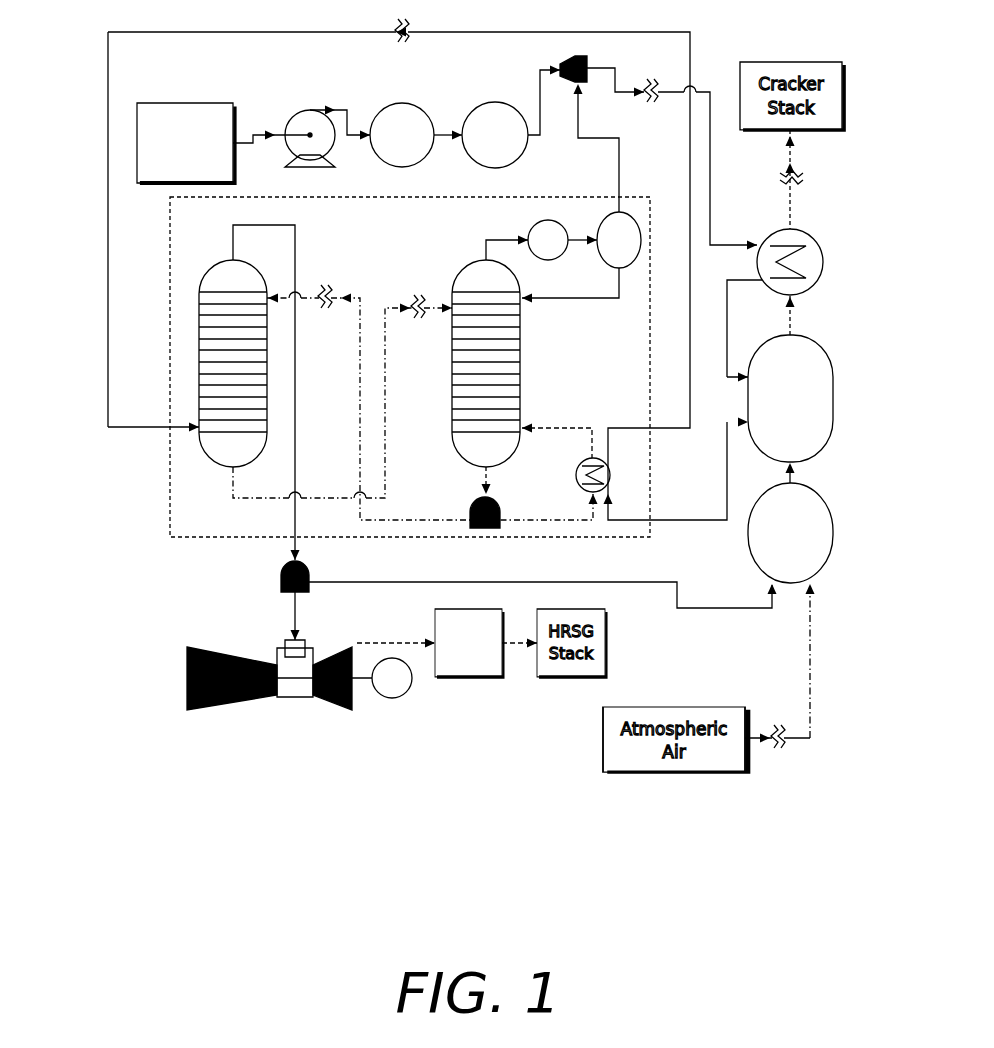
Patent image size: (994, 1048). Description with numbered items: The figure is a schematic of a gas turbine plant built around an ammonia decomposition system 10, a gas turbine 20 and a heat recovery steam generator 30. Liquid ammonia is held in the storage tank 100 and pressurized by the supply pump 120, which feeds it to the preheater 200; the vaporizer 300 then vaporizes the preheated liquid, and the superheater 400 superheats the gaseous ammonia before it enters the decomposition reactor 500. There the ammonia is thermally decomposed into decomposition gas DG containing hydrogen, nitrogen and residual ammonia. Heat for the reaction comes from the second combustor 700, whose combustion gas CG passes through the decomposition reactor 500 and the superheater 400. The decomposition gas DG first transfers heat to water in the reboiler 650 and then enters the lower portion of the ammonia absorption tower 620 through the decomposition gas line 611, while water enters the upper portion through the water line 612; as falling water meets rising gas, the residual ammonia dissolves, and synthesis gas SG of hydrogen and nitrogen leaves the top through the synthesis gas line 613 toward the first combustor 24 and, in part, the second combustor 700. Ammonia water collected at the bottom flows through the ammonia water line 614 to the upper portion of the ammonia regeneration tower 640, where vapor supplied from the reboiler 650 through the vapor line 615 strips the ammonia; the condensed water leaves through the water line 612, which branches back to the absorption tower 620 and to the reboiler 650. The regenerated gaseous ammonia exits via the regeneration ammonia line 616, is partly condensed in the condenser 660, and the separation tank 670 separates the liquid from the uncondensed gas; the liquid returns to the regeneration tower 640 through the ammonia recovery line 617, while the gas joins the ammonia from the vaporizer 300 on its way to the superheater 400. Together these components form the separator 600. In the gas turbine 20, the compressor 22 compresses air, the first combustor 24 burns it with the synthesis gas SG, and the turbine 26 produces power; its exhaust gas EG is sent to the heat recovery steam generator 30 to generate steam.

The ammonia decomposition system 10 is at (832, 208).
The gas turbine 20 is at (299, 687).
The compressor 22 is at (230, 706).
The first combustor 24 is at (291, 662).
The turbine 26 is at (332, 698).
The heat recovery steam generator 30 is at (469, 680).
The storage tank 100 is at (187, 101).
The supply pump 120 is at (311, 118).
The preheater 200 is at (404, 118).
The vaporizer 300 is at (497, 118).
The superheater 400 is at (834, 262).
The decomposition reactor 500 is at (835, 398).
The separator 600 is at (160, 255).
The decomposition gas line 611 is at (136, 430).
The water line 612 is at (360, 294).
The synthesis gas line 613 is at (286, 509).
The ammonia water line 614 is at (394, 305).
The vapor line 615 is at (571, 425).
The regeneration ammonia line 616 is at (506, 238).
The ammonia recovery line 617 is at (568, 300).
The ammonia absorption tower 620 is at (205, 311).
The ammonia regeneration tower 640 is at (456, 437).
The reboiler 650 is at (577, 473).
The condenser 660 is at (543, 222).
The separation tank 670 is at (630, 224).
The second combustor 700 is at (835, 534).
The decomposition gas DG is at (108, 88).
The synthesis gas SG is at (290, 550).
The exhaust gas EG is at (401, 641).
The combustion gas CG is at (794, 478).